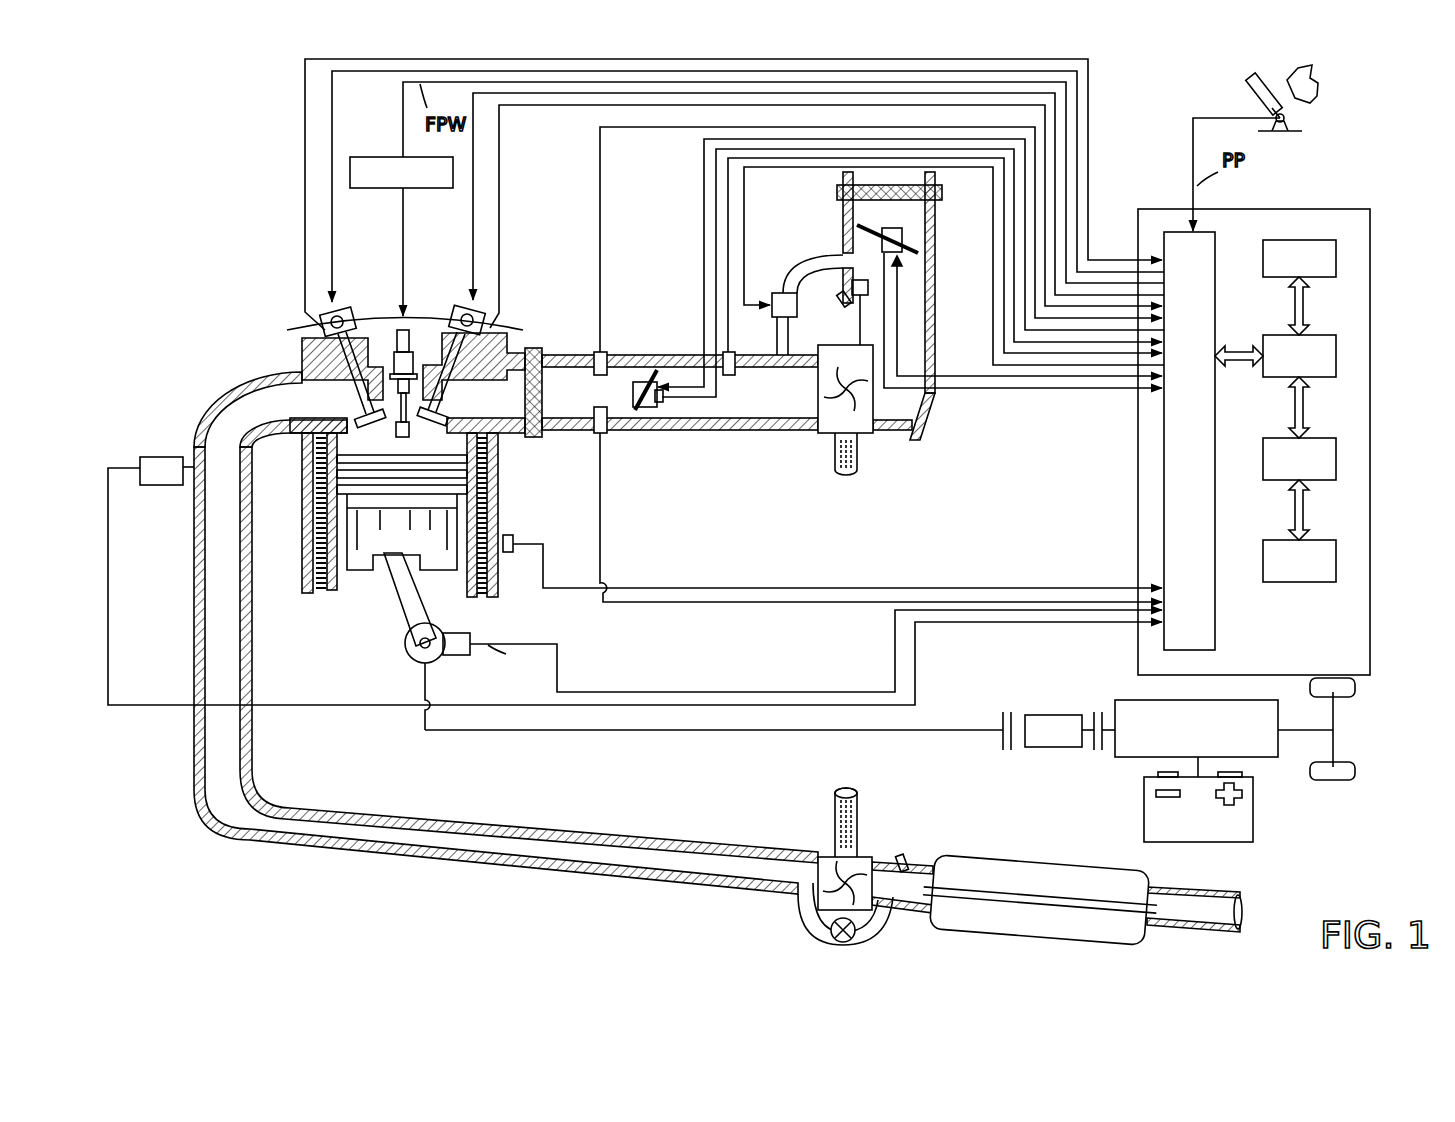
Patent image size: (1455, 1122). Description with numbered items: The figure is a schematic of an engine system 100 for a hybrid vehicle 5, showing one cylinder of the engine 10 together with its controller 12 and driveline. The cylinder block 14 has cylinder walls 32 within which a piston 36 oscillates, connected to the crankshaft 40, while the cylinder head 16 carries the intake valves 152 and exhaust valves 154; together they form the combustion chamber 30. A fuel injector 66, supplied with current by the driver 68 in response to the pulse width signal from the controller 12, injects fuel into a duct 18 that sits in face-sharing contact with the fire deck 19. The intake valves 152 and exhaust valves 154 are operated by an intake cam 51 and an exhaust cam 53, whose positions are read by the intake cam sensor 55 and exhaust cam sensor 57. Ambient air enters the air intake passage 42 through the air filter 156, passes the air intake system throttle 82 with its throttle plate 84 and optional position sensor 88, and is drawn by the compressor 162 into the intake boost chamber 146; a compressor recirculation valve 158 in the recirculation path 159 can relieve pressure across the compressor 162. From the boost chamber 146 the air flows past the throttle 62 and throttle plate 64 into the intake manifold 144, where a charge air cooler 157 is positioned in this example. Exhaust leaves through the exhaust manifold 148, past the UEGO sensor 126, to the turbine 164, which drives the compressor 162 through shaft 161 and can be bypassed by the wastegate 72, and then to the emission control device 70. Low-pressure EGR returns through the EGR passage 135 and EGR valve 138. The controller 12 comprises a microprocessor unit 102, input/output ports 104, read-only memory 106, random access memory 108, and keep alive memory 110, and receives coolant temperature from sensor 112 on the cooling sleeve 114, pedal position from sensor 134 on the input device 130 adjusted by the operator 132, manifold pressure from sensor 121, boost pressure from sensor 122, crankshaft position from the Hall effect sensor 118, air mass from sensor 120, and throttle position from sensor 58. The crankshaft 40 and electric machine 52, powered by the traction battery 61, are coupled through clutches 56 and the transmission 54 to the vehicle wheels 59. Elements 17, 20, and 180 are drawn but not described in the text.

The engine system 100 is at (152, 124).
The engine 10 is at (230, 268).
The vehicle 5 is at (1388, 716).
The electronic engine controller 12 is at (1372, 212).
The cylinder block 14 is at (292, 492).
The cylinder head 16 is at (523, 340).
The cylinder block 17 is at (308, 568).
The duct 18 is at (437, 352).
The fire deck 19 is at (505, 346).
The cylinder 20 is at (292, 610).
The combustion chamber 30 is at (390, 438).
The cylinder walls 32 is at (345, 585).
The piston 36 is at (393, 548).
The crankshaft 40 is at (415, 655).
The air intake passage 42 is at (905, 223).
The intake cam 51 is at (462, 305).
The electric machine 52 is at (1050, 748).
The exhaust cam 53 is at (345, 305).
The transmission 54 is at (1258, 758).
The intake cam sensor 55 is at (485, 330).
The clutch 56 is at (1003, 712).
The exhaust cam sensor 57 is at (330, 315).
The throttle position sensor 58 is at (662, 405).
The vehicle wheels 59 is at (1337, 782).
The traction battery 61 is at (1195, 843).
The throttle 62 is at (642, 378).
The throttle plate 64 is at (657, 378).
The fuel injector 66 is at (406, 325).
The driver 68 is at (386, 157).
The emission control device 70 is at (932, 925).
The wastegate 72 is at (833, 930).
The air intake system throttle 82 is at (853, 245).
The throttle plate 84 is at (852, 228).
The position sensor 88 is at (853, 250).
The microprocessor unit 102 is at (1337, 358).
The input/output ports 104 is at (1216, 240).
The read-only memory 106 is at (1337, 258).
The random access memory 108 is at (1337, 460).
The keep alive memory 110 is at (1337, 565).
The temperature sensor 112 is at (513, 543).
The cooling sleeve 114 is at (498, 575).
The Hall effect sensor 118 is at (455, 657).
The air mass sensor 120 is at (604, 434).
The pressure sensor 121 is at (603, 350).
The pressure sensor 122 is at (733, 353).
The UEGO sensor 126 is at (140, 465).
The input device 130 is at (1256, 100).
The vehicle operator 132 is at (1322, 80).
The position sensor 134 is at (1302, 120).
The EGR passage 135 is at (845, 302).
The EGR valve 138 is at (852, 286).
The intake manifold 144 is at (596, 405).
The intake boost chamber 146 is at (755, 405).
The exhaust manifold 148 is at (291, 414).
The intake valves 152 is at (450, 398).
The exhaust valves 154 is at (345, 385).
The air filter 156 is at (942, 190).
The charge air cooler 157 is at (540, 437).
The compressor recirculation valve 158 is at (775, 293).
The compressor recirculation path 159 is at (792, 343).
The shaft 161 is at (858, 460).
The compressor 162 is at (868, 432).
The turbine 164 is at (822, 857).
The exhaust system 180 is at (452, 884).